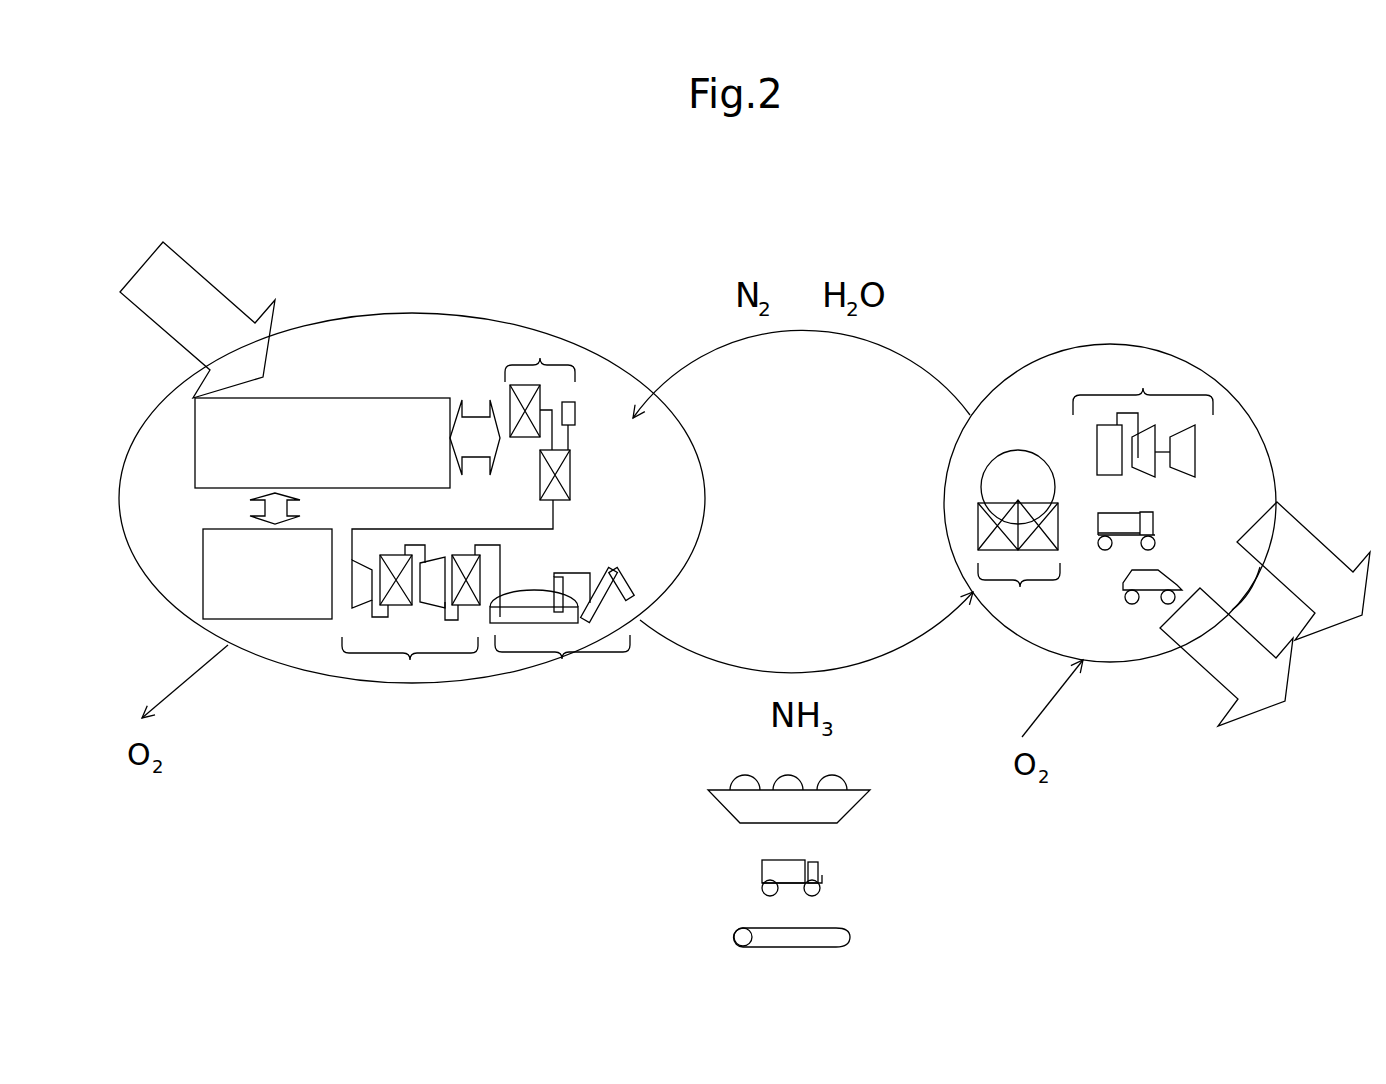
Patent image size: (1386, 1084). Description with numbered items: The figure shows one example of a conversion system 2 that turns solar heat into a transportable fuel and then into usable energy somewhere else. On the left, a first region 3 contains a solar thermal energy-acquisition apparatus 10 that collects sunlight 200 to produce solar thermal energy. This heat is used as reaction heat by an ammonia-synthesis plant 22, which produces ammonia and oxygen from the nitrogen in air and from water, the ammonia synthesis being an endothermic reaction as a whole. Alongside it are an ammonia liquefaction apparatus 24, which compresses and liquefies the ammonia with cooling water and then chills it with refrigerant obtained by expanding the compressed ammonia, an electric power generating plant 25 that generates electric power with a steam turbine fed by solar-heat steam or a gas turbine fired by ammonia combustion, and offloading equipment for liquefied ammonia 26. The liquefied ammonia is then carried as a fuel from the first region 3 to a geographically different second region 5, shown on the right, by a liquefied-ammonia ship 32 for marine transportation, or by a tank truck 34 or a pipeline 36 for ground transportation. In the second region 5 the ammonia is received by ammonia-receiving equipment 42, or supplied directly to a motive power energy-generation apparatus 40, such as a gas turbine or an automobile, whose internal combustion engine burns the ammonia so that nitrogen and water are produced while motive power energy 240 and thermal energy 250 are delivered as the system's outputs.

The conversion system 2 is at (1212, 222).
The first region 3 is at (178, 613).
The second region 5 is at (1255, 412).
The solar thermal energy-acquisition apparatus 10 is at (325, 398).
The ammonia-synthesis plant 22 is at (540, 358).
The ammonia liquefaction apparatus 24 is at (410, 660).
The electric power generating plant 25 is at (263, 620).
The offloading equipment for liquefied ammonia 26 is at (562, 659).
The liquefied-ammonia ship 32 is at (857, 807).
The tank truck 34 is at (827, 882).
The pipeline 36 is at (850, 932).
The motive power energy-generation apparatus 40 is at (1143, 388).
The ammonia-receiving equipment 42 is at (1020, 587).
The sunlight 200 is at (143, 268).
The motive power energy 240 is at (1298, 550).
The thermal energy 250 is at (1202, 655).